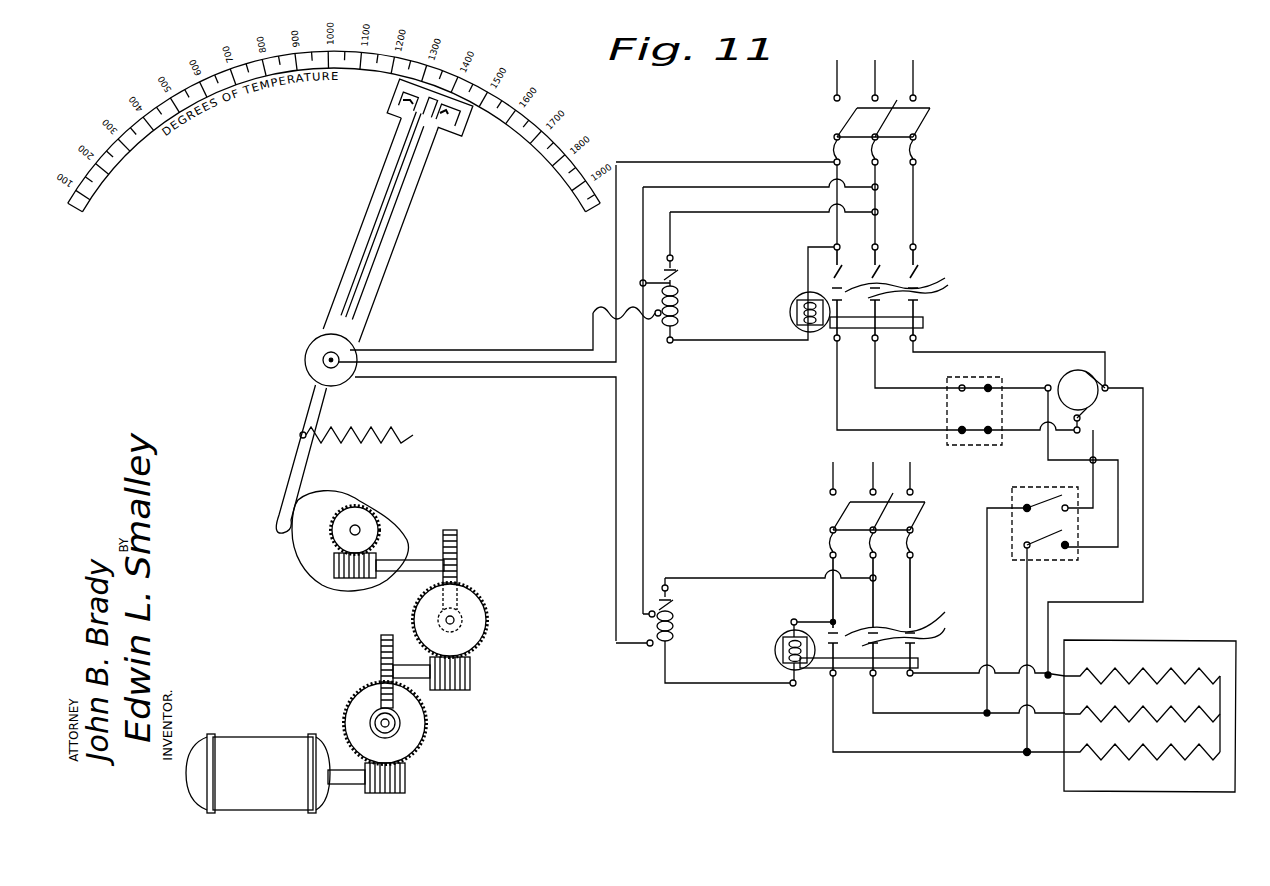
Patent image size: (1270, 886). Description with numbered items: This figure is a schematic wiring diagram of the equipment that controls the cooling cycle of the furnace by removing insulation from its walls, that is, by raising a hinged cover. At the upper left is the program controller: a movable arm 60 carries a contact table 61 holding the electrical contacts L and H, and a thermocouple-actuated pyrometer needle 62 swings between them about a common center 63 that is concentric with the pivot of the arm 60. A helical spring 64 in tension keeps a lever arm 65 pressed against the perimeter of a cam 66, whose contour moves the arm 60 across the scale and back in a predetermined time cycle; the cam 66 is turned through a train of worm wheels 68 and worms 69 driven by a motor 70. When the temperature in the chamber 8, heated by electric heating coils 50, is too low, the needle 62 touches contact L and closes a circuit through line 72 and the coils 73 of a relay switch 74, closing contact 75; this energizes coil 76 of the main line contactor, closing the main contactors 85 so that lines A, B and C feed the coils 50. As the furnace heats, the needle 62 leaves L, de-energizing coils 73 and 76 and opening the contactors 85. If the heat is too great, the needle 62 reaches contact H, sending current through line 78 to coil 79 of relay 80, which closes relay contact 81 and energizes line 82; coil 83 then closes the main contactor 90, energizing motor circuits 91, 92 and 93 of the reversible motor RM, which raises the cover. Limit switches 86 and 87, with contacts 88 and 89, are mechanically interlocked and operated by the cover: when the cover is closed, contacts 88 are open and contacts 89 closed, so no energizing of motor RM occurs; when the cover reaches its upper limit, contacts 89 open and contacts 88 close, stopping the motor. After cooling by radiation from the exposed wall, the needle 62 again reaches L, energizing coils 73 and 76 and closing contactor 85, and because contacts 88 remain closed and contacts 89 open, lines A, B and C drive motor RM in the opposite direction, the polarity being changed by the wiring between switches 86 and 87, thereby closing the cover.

The furnace chamber 8 is at (1140, 640).
The electric heating coils 50 is at (1108, 683).
The movable arm 60 is at (408, 226).
The contact table 61 is at (466, 130).
The pyrometer needle 62 is at (385, 287).
The common center 63 is at (322, 363).
The helical spring 64 is at (366, 436).
The lever arm 65 is at (290, 490).
The cam 66 is at (308, 556).
The worm wheels 68 is at (368, 522).
The worms 69 is at (340, 573).
The motor 70 is at (248, 748).
The line 72 is at (468, 377).
The relay coils 73 is at (675, 640).
The relay switch 74 is at (672, 606).
The contact 75 is at (660, 595).
The main line contactor coil 76 is at (776, 658).
The line 78 is at (455, 350).
The relay coil 79 is at (680, 316).
The relay 80 is at (680, 285).
The relay contact 81 is at (676, 266).
The line 82 is at (772, 220).
The main contactor coil 83 is at (803, 328).
The main contactors 85 is at (562, 378).
The limit switch 86 is at (1055, 562).
The limit switch 87 is at (972, 446).
The contacts 88 is at (1065, 522).
The contacts 89 is at (980, 414).
The main contactor 90 is at (904, 295).
The motor circuit 91 is at (1022, 352).
The motor circuit 92 is at (915, 382).
The motor circuit 93 is at (852, 430).
The electrical contact L is at (403, 100).
The electrical contact H is at (445, 137).
The reversible motor RM is at (1080, 395).
The electrical line A is at (833, 249).
The electrical line B is at (872, 249).
The electrical line C is at (910, 249).